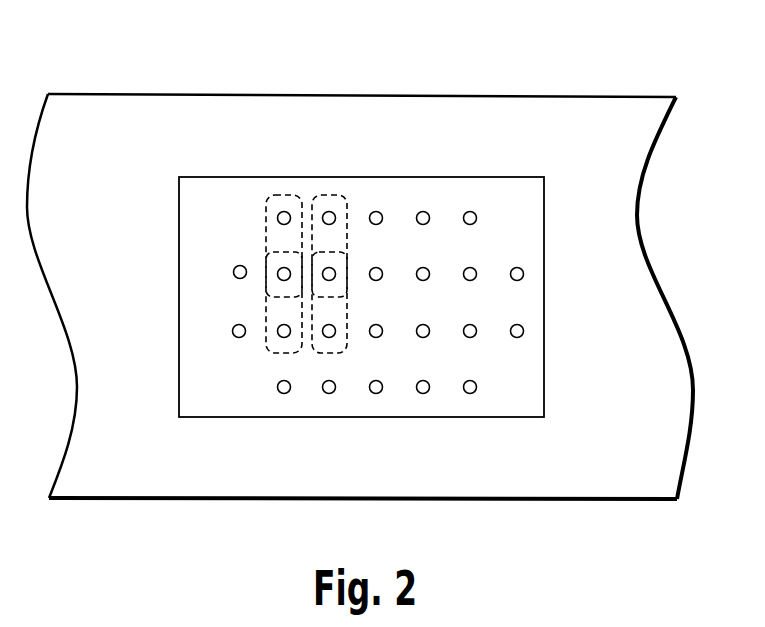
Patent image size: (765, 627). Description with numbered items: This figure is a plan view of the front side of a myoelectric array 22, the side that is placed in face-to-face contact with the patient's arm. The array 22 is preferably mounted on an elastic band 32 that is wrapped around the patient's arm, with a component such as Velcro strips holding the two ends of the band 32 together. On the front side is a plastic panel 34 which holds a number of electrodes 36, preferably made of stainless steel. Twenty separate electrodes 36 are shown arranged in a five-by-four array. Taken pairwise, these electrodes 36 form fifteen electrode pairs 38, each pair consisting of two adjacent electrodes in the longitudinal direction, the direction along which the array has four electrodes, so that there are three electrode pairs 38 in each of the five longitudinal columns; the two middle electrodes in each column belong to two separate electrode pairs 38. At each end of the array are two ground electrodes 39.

The myoelectric array 22 is at (360, 255).
The elastic band 32 is at (112, 178).
The plastic panel 34 is at (233, 212).
The electrodes 36 is at (383, 218).
The electrode pairs 38 is at (265, 245).
The ground electrodes 39 is at (234, 268).